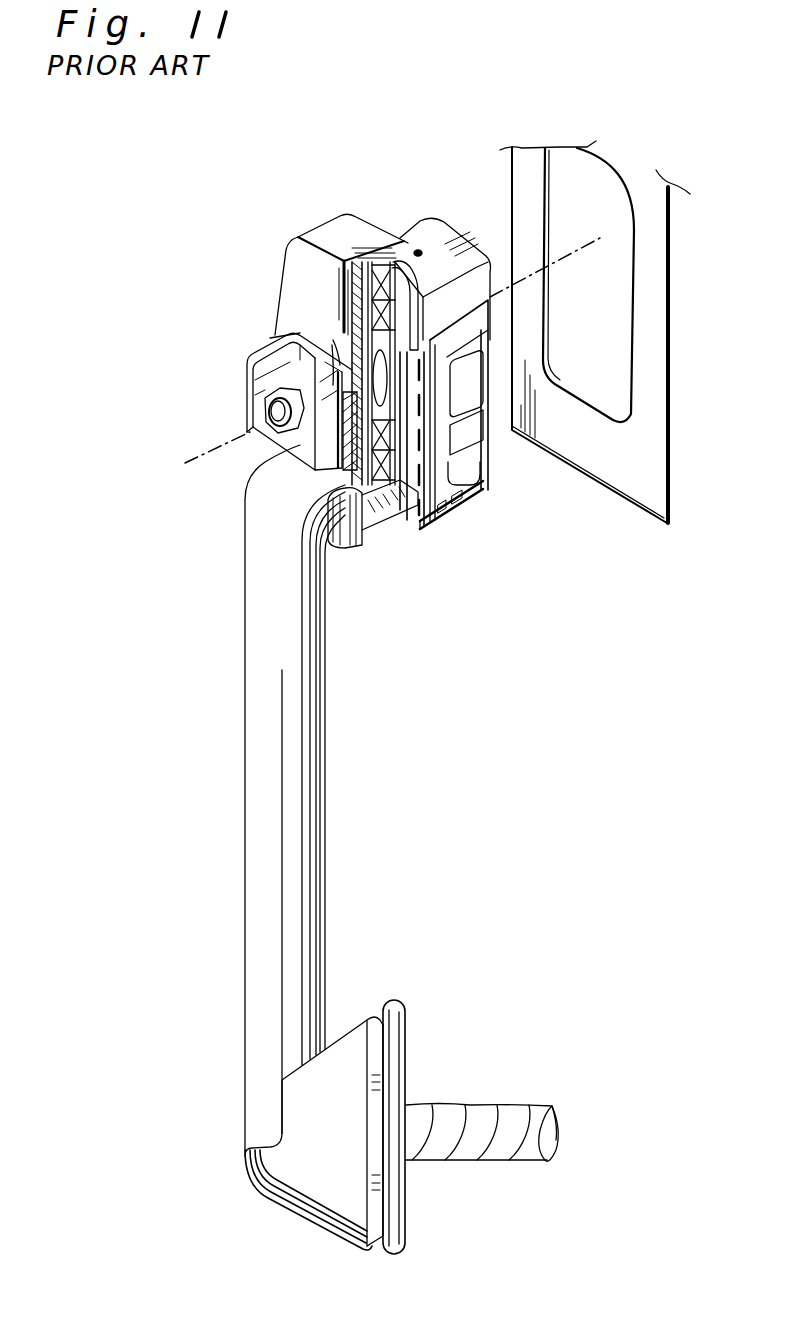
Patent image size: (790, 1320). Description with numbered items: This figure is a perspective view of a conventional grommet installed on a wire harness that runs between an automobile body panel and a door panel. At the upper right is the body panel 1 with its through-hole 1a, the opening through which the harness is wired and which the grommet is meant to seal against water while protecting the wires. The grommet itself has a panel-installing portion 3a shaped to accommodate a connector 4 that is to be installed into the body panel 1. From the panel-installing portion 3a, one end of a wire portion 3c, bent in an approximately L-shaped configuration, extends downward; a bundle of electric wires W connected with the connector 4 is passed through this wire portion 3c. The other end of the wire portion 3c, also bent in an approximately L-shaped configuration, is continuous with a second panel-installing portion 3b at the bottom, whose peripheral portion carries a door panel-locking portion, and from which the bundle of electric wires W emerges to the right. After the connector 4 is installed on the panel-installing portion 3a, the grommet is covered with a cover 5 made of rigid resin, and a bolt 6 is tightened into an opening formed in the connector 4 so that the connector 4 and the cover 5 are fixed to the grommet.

The body panel 1 is at (624, 478).
The through-hole 1a is at (568, 390).
The panel-installing portion 3a is at (355, 570).
The panel-installing portion 3b is at (357, 1080).
The wire portion 3c is at (312, 838).
The connector 4 is at (456, 258).
The cover 5 is at (290, 283).
The bolt 6 is at (248, 425).
The bundle of electric wires W is at (513, 1108).